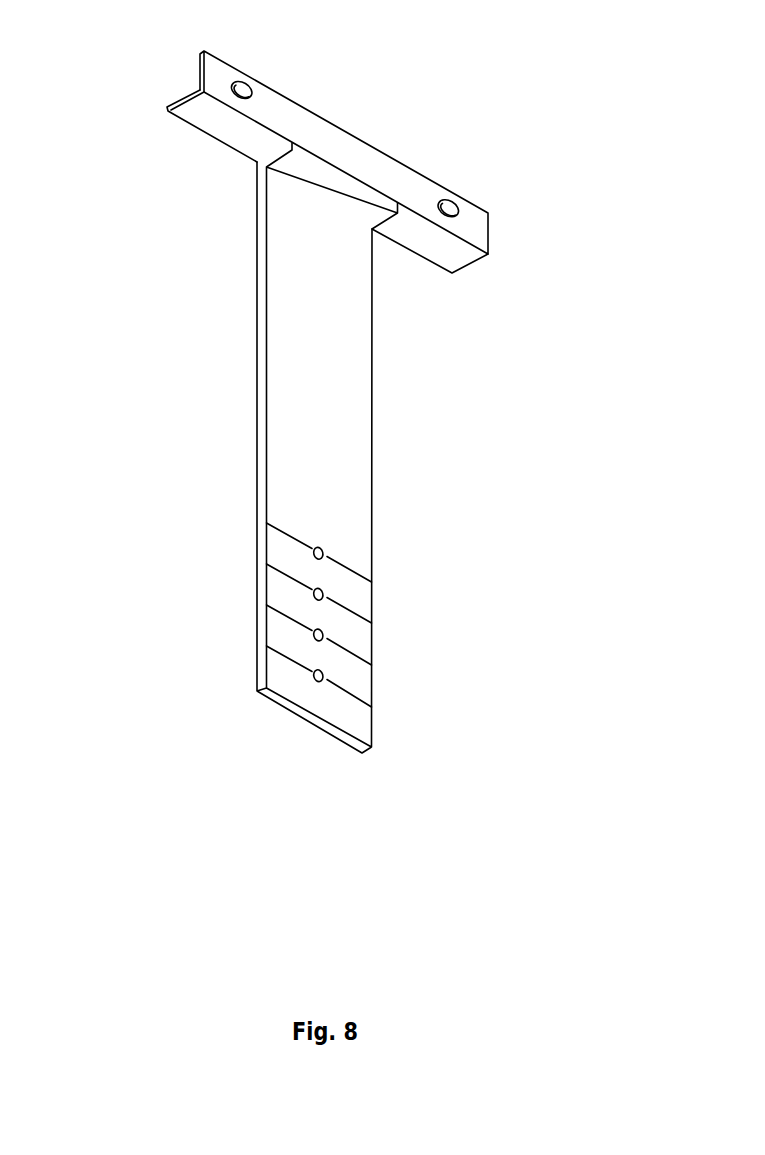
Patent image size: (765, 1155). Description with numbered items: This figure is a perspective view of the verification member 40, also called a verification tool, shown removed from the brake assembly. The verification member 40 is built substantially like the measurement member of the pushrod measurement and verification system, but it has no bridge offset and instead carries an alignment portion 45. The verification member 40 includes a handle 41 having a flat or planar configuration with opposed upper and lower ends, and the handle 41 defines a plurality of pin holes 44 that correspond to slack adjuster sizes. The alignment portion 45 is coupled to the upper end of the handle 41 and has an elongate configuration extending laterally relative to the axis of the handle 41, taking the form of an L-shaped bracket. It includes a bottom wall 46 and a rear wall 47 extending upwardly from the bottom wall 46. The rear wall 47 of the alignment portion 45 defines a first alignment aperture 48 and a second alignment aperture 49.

The verification member 40 is at (135, 195).
The handle 41 is at (337, 444).
The pin holes 44 is at (313, 636).
The alignment portion 45 is at (523, 256).
The bottom wall 46 is at (262, 145).
The rear wall 47 is at (363, 162).
The first alignment aperture 48 is at (240, 82).
The second alignment aperture 49 is at (448, 207).